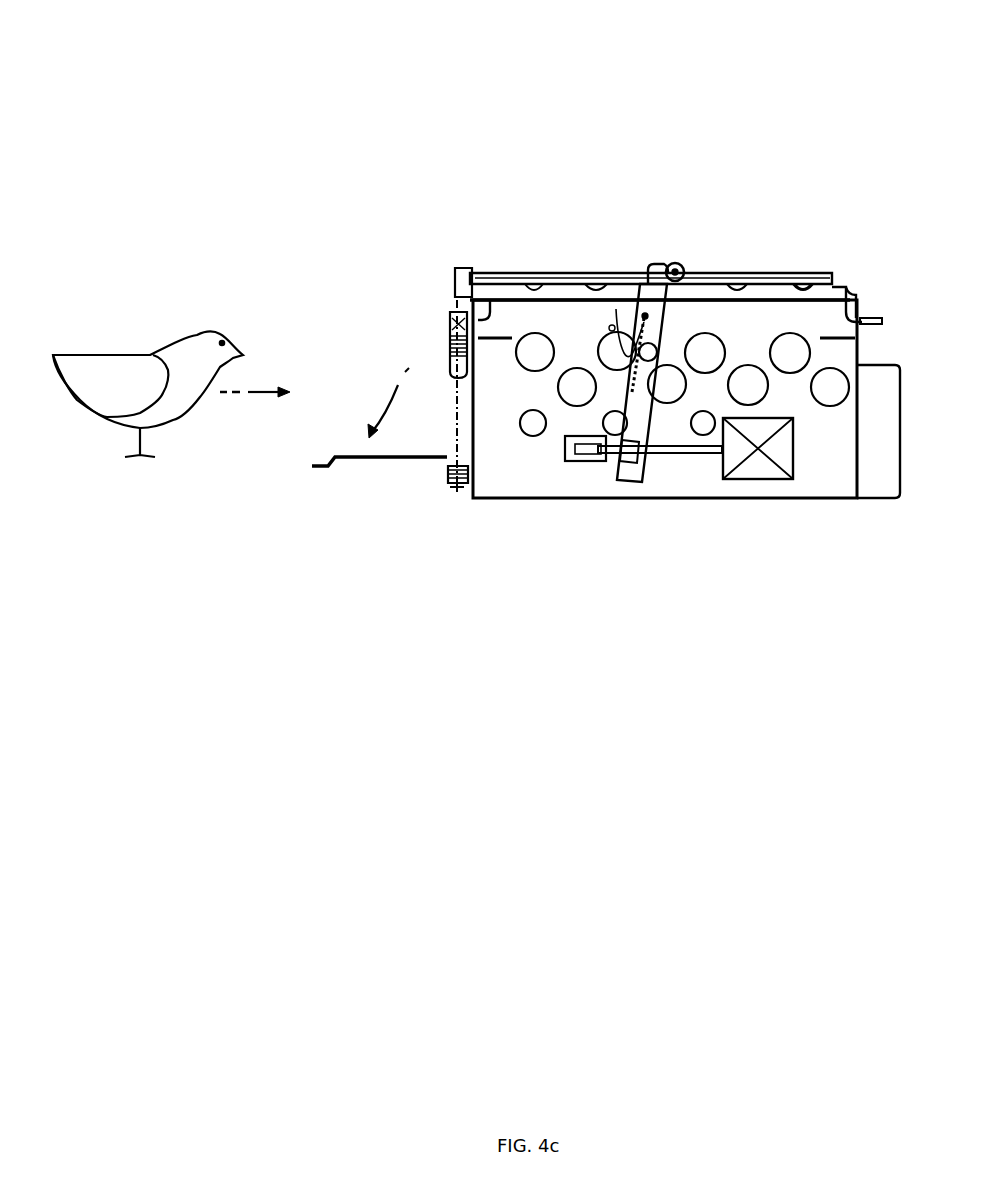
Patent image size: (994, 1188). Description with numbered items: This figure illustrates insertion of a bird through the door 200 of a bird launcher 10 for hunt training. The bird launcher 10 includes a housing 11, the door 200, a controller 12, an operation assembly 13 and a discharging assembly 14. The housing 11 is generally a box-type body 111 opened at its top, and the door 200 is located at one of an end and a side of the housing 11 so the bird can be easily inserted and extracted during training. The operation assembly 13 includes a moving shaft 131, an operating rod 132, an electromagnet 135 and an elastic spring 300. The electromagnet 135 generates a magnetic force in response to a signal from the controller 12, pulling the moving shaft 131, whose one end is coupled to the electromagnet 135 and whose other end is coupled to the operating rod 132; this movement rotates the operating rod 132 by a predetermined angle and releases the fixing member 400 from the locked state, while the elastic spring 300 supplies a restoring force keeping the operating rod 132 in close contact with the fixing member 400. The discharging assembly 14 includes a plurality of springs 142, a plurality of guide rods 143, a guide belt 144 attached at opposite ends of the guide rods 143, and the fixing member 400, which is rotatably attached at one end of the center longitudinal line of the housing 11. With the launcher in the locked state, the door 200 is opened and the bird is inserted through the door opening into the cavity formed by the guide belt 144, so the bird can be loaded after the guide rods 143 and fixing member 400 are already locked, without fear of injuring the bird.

The bird launcher 10 is at (657, 138).
The housing 11 is at (552, 507).
The body 111 is at (497, 500).
The controller 12 is at (876, 497).
The operation assembly 13 is at (698, 478).
The moving shaft 131 is at (667, 470).
The operating rod 132 is at (630, 488).
The electromagnet 135 is at (778, 480).
The discharging assembly 14 is at (743, 272).
The springs 142 is at (452, 348).
The guide rods 143 is at (848, 280).
The guide belt 144 is at (808, 280).
The door 200 is at (364, 462).
The elastic spring 300 is at (628, 278).
The fixing member 400 is at (573, 278).